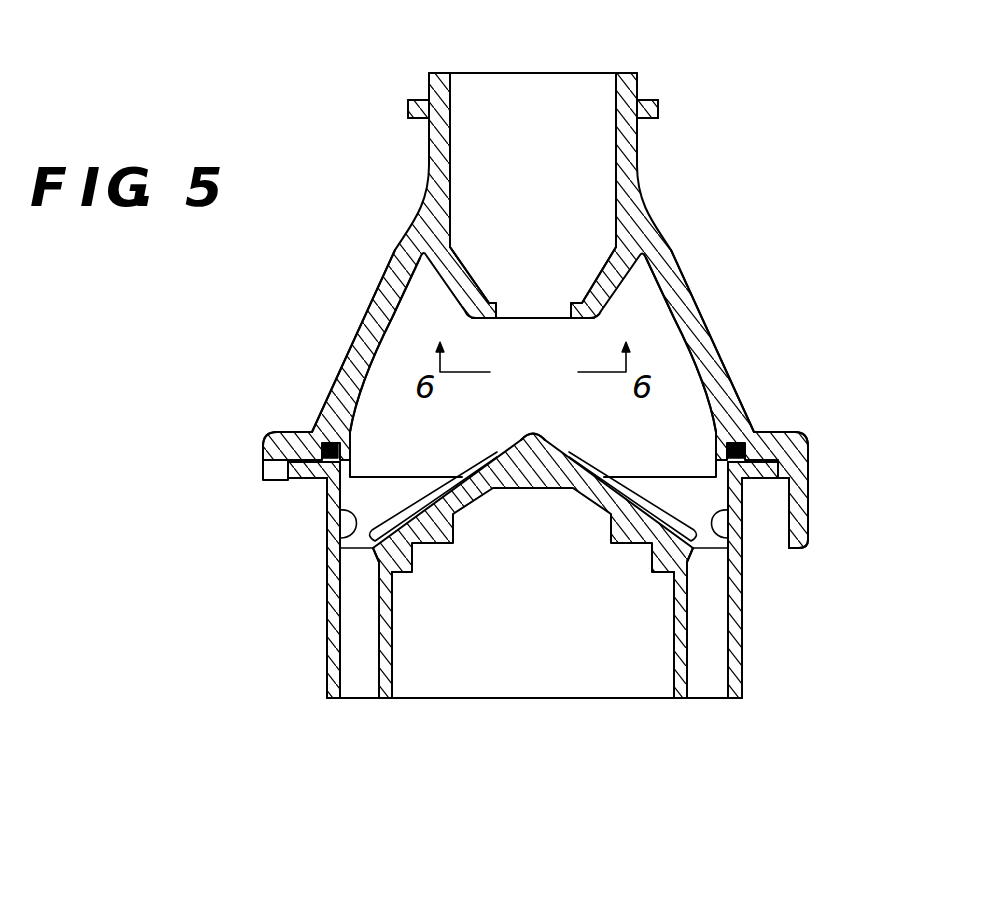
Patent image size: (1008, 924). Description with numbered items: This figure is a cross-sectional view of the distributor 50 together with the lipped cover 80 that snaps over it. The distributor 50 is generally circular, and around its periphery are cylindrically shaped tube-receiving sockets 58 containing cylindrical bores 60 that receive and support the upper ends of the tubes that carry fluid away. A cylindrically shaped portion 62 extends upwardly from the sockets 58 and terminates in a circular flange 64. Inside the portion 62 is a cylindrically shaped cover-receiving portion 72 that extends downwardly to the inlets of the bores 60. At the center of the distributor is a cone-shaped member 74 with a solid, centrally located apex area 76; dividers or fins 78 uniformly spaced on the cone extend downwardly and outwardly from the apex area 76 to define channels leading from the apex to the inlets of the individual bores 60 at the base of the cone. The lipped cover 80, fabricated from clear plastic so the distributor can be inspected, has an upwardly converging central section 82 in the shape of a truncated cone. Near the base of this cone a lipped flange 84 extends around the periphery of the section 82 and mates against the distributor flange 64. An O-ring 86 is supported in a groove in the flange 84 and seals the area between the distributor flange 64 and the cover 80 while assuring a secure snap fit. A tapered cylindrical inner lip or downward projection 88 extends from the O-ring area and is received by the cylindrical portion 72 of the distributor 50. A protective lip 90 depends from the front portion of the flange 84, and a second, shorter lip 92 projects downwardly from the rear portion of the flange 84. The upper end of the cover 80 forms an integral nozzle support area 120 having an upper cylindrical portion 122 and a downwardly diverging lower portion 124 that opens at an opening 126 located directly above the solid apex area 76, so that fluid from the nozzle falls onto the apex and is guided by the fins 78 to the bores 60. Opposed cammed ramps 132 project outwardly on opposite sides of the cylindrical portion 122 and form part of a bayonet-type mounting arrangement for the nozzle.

The distributor 50 is at (310, 588).
The tube-receiving sockets 58 is at (327, 650).
The cylindrical bores 60 is at (378, 665).
The cylindrically shaped portion 62 is at (323, 503).
The circular flange 64 is at (810, 443).
The cover-receiving portion 72 is at (338, 535).
The cone-shaped member 74 is at (486, 448).
The apex area 76 is at (535, 432).
The dividers or fins 78 is at (413, 506).
The lipped cover 80 is at (340, 292).
The central section 82 is at (355, 343).
The lipped flange 84 is at (781, 440).
The O-ring 86 is at (742, 442).
The inner lip or downward projection 88 is at (680, 478).
The protective lip 90 is at (810, 517).
The second, shorter lip 92 is at (266, 468).
The nozzle support area 120 is at (412, 150).
The upper cylindrical portion 122 is at (617, 123).
The downwardly diverging lower portion 124 is at (597, 285).
The opening 126 is at (540, 293).
The cammed ramps 132 is at (413, 100).